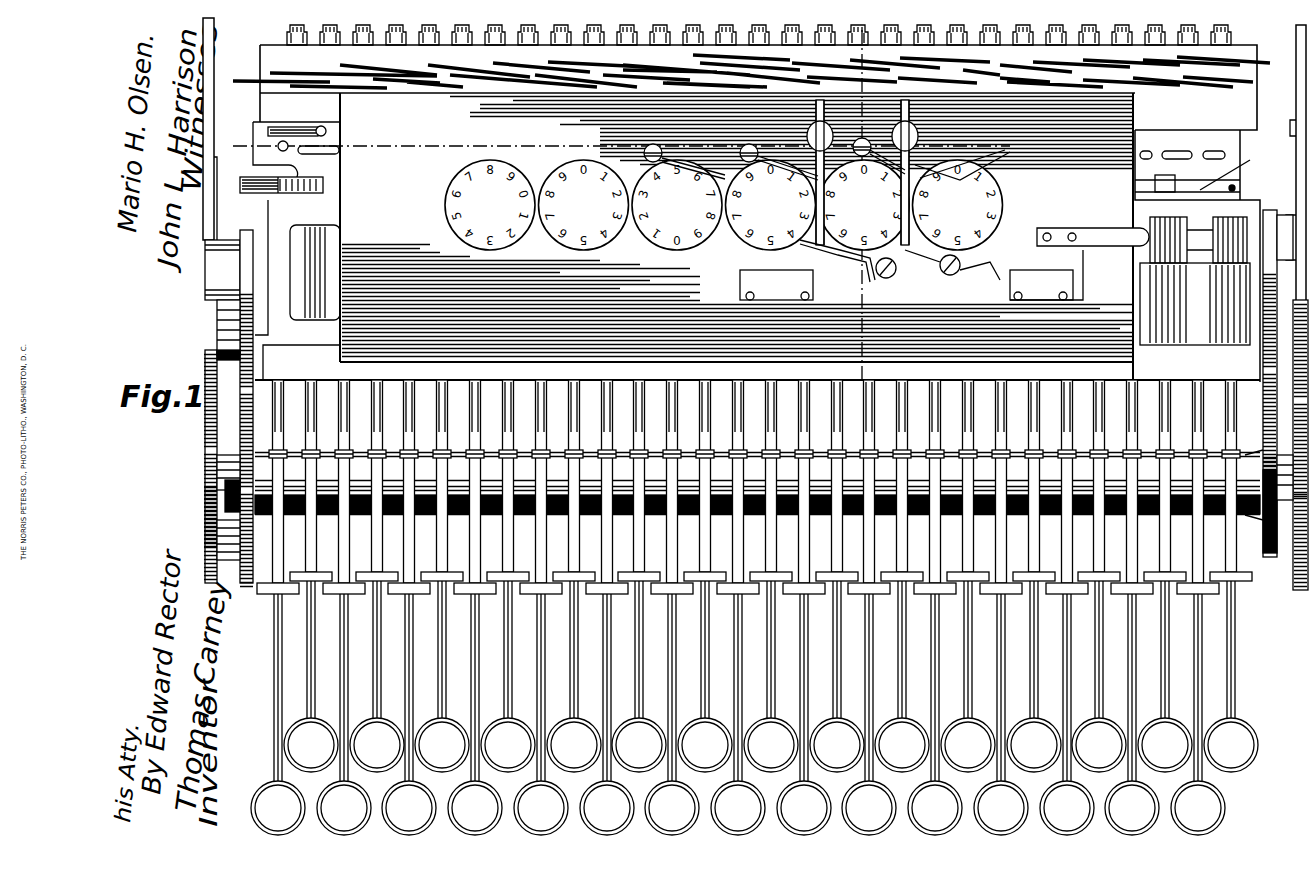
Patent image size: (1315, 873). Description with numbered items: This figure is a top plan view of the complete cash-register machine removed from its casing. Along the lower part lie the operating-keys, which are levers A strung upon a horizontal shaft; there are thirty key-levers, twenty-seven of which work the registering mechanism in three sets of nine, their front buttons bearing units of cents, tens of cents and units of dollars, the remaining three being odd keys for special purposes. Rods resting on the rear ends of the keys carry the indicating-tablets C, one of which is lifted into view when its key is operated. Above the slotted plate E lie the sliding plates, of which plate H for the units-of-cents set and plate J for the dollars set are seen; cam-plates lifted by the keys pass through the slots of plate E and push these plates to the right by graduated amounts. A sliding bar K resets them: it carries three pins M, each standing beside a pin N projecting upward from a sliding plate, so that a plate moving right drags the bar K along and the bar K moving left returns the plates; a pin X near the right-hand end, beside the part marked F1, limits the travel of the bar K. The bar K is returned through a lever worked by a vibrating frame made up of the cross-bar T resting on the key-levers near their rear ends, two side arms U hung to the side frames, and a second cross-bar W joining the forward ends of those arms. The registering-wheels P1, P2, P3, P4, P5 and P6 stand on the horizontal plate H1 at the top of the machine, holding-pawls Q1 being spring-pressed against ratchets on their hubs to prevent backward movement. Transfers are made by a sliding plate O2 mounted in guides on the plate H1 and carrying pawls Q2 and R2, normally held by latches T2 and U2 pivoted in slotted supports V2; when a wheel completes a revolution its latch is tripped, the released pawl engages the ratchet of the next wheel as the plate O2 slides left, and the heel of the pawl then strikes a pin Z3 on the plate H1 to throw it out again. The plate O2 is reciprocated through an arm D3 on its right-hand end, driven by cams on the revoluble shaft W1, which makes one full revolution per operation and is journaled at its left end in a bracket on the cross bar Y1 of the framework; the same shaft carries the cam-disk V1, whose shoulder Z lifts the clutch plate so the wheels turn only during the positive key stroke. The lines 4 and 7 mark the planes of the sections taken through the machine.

The key-levers A is at (1238, 700).
The indicating-tablets C is at (443, 85).
The slotted plate E is at (278, 126).
The sliding plate J is at (320, 163).
The cross-bar of vibrating frame T is at (281, 196).
The side arms of vibrating frame U is at (1232, 330).
The horizontal plate H1 is at (737, 301).
The cross bar of framework Y1 is at (297, 290).
The primary registering-wheel P1 is at (957, 205).
The second registering-wheel P2 is at (863, 205).
The third registering-wheel P3 is at (770, 205).
The fourth registering-wheel P4 is at (676, 205).
The fifth registering-wheel P5 is at (583, 205).
The sixth registering-wheel P6 is at (490, 205).
The holding-pawls Q1 is at (935, 165).
The transfer pawl Q2 is at (978, 282).
The cam-disk V1 is at (912, 130).
The slotted supports V2 is at (814, 125).
The latch U2 is at (830, 160).
The latch T2 is at (962, 154).
The arm D3 is at (1095, 240).
The sliding plate H is at (1197, 256).
The sliding bar K is at (1187, 194).
The pins M is at (1189, 175).
The pin N is at (1148, 175).
The arm F1 is at (1232, 164).
The pin X is at (1236, 188).
The revoluble shaft W1 is at (1198, 240).
The second cross-bar W is at (1180, 330).
The shoulder of cam-disk Z is at (875, 285).
The transfer pawl R2 is at (890, 284).
The pin Z3 is at (968, 282).
The sliding plate O2 is at (1042, 273).
The section line 4 4 is at (1280, 228).
The section line 7 7 is at (857, 366).